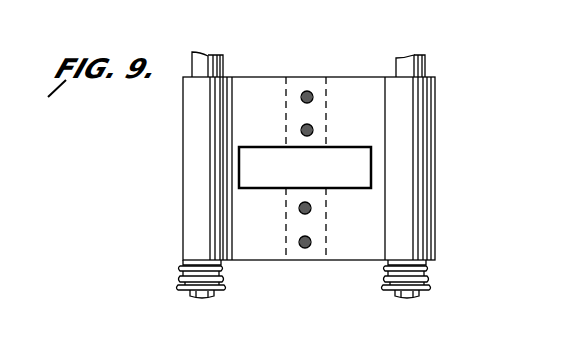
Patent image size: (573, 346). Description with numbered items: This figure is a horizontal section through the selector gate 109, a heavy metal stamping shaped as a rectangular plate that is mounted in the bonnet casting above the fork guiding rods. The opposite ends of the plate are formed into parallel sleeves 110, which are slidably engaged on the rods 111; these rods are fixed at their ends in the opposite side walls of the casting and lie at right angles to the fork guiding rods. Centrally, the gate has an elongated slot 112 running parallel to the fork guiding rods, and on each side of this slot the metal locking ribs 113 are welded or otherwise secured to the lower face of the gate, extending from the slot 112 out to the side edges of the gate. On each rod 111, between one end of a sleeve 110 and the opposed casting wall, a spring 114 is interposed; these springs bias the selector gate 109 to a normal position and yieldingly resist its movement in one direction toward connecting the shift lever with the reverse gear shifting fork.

The selector gate 109 is at (260, 76).
The sleeves 110 is at (196, 121).
The rods 111 is at (201, 54).
The elongated slot 112 is at (353, 146).
The locking ribs 113 is at (329, 93).
The spring 114 is at (185, 284).